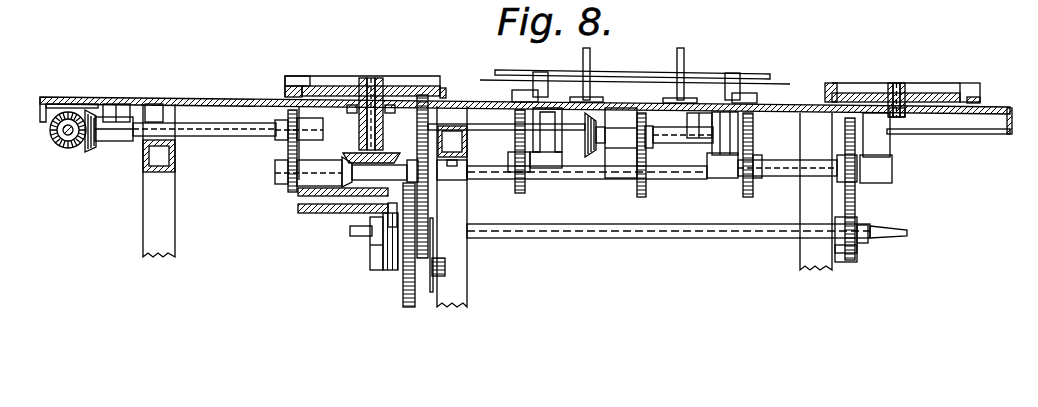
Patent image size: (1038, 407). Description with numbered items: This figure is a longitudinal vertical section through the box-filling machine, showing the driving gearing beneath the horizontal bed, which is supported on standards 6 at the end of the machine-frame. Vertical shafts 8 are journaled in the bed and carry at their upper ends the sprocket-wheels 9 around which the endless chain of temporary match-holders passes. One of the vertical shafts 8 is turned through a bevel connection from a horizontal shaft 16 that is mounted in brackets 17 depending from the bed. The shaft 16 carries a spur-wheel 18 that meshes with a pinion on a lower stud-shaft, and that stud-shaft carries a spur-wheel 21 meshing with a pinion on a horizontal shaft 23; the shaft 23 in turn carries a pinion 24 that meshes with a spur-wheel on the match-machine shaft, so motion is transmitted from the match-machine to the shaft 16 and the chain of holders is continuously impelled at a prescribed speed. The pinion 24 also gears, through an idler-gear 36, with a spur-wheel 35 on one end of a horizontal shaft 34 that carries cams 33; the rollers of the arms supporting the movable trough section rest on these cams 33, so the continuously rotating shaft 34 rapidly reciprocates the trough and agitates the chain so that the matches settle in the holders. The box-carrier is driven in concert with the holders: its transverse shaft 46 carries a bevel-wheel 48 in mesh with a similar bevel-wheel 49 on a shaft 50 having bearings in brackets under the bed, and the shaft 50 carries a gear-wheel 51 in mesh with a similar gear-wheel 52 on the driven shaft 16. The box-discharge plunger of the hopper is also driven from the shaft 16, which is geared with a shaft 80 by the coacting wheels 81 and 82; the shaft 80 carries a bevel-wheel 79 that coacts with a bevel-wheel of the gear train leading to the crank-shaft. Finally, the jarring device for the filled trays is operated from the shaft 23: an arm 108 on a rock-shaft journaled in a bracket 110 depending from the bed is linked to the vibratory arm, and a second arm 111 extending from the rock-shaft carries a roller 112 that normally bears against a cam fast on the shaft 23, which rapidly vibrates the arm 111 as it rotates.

The standards 6 is at (176, 250).
The vertical shafts 8 is at (372, 77).
The sprocket-wheels 9 is at (312, 78).
The horizontal shaft 16 is at (492, 181).
The brackets 17 is at (455, 182).
The spur-wheel 18 is at (419, 140).
The spur-wheel 21 is at (406, 300).
The horizontal shaft 23 is at (687, 227).
The pinion 24 is at (841, 262).
The cams 33 is at (748, 197).
The horizontal shaft 34 is at (790, 177).
The spur-wheel 35 is at (857, 196).
The idler-gear 36 is at (858, 260).
The transverse shaft 46 is at (63, 131).
The bevel-wheel 48 is at (63, 149).
The bevel-wheel 49 is at (93, 149).
The shaft 50 is at (210, 137).
The gear-wheel 51 is at (288, 135).
The gear-wheel 52 is at (280, 175).
The bevel-wheel 79 is at (591, 160).
The shaft 80 is at (677, 145).
The gear wheel 81 is at (650, 140).
The gear wheel 82 is at (641, 197).
The arm 108 is at (300, 212).
The bracket 110 is at (346, 214).
The arm 111 is at (371, 246).
The roller 112 is at (392, 266).